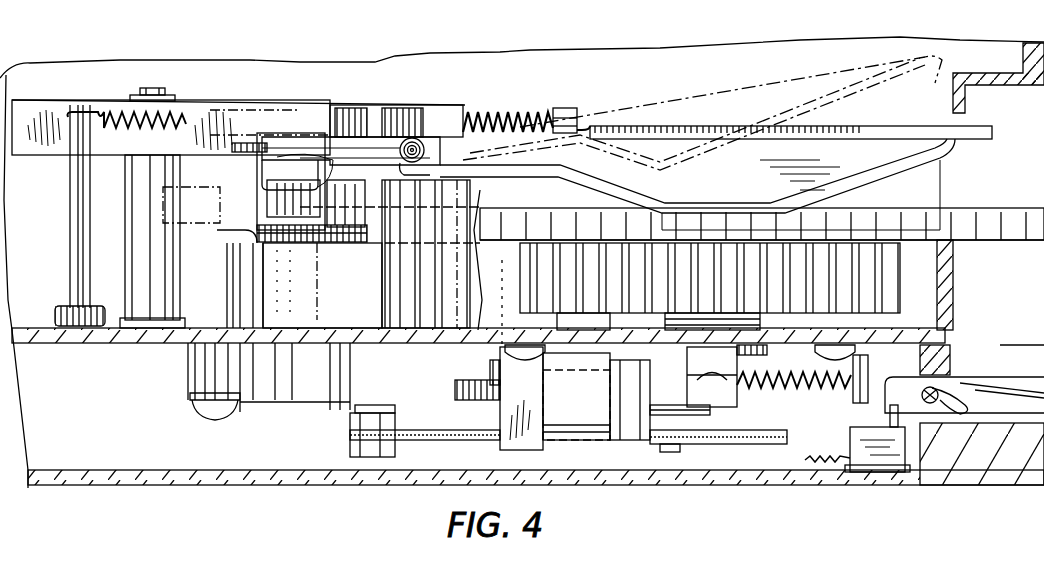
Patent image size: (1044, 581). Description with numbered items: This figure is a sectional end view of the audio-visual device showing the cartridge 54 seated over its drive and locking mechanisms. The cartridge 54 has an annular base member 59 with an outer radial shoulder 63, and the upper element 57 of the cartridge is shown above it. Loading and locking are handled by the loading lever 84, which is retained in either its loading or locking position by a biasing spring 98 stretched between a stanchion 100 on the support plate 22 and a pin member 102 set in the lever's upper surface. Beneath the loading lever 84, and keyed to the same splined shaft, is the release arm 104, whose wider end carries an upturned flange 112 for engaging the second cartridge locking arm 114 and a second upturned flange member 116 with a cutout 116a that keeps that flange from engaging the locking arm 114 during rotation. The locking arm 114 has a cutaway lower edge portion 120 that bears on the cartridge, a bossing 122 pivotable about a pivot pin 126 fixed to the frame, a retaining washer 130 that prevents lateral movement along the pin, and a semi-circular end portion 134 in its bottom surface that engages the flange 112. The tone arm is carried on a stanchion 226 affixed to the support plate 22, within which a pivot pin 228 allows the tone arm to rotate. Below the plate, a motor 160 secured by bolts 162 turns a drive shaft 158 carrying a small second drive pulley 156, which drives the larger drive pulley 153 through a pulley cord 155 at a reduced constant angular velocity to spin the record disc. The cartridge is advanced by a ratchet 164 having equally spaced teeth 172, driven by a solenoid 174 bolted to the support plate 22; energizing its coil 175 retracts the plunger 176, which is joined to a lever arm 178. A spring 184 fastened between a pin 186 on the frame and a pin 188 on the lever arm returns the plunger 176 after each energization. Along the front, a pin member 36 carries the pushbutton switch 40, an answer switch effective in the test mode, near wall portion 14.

The pivot pin 228 is at (158, 95).
The stanchion 100 is at (70, 236).
The stanchion 226 is at (170, 260).
The semi-circular end portion 134 is at (280, 180).
The release arm 104 is at (335, 251).
The upturned flange 112 is at (292, 217).
The second upturned flange member 116 is at (342, 112).
The cutout 116a is at (376, 132).
The bossing 122 is at (351, 152).
The pivot pin 126 is at (414, 140).
The retaining washer 130 is at (408, 177).
The biasing spring 98 is at (524, 114).
The pin member 102 is at (565, 108).
The loading lever 84 is at (719, 113).
The second cartridge locking arm 114 is at (690, 83).
The cutaway lower edge portion 120 is at (747, 197).
The outer radial shoulder 63 is at (987, 215).
The annular base member 59 is at (975, 250).
The cartridge 54 is at (1025, 252).
The plate 57 is at (1010, 308).
The ratchet 164 is at (644, 242).
The teeth 172 is at (540, 294).
The support plate 22 is at (88, 343).
The motor 160 is at (302, 397).
The bolts 162 is at (203, 428).
The drive shaft 158 is at (352, 434).
The second drive pulley 156 is at (350, 452).
The pulley cord 155 is at (434, 440).
The solenoid 174 is at (522, 445).
The coil 175 is at (585, 432).
The plunger 176 is at (630, 400).
The drive pulley 153 is at (680, 446).
The pin 188 is at (745, 385).
The spring 184 is at (797, 390).
The pin 186 is at (858, 390).
The lever arm 178 is at (786, 365).
The switch 40 is at (996, 376).
The pin member 36 is at (924, 392).
The plate 14 is at (1002, 380).